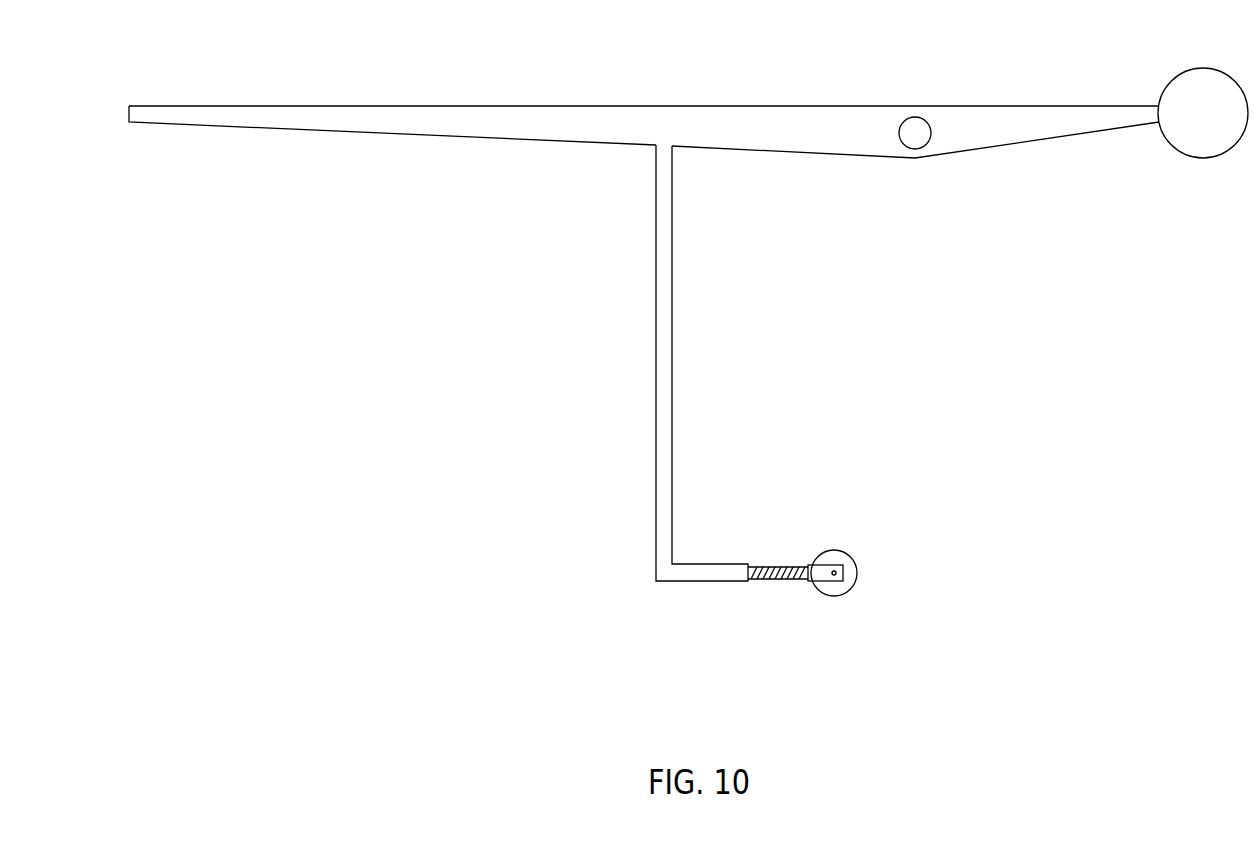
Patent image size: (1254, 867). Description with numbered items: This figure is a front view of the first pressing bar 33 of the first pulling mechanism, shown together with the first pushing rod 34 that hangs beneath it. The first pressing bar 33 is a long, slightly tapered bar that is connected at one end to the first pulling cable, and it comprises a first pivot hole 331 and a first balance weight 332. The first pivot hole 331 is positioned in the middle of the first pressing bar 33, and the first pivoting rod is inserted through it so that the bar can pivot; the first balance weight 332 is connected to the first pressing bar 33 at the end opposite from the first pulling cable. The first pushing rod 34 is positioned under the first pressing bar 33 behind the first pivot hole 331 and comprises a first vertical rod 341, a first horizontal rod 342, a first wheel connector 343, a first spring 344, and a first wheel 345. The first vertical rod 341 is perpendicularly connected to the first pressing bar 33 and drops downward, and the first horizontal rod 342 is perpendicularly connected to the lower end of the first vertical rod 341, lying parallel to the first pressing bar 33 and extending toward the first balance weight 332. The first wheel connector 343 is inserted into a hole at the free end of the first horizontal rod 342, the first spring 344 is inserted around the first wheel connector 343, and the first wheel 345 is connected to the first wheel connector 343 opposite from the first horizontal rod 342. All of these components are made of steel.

The first pressing bar 33 is at (750, 122).
The first pivot hole 331 is at (915, 140).
The first balance weight 332 is at (1192, 89).
The first pushing rod 34 is at (673, 287).
The first vertical rod 341 is at (663, 338).
The first horizontal rod 342 is at (710, 573).
The first wheel connector 343 is at (807, 568).
The first spring 344 is at (775, 567).
The first wheel 345 is at (853, 563).